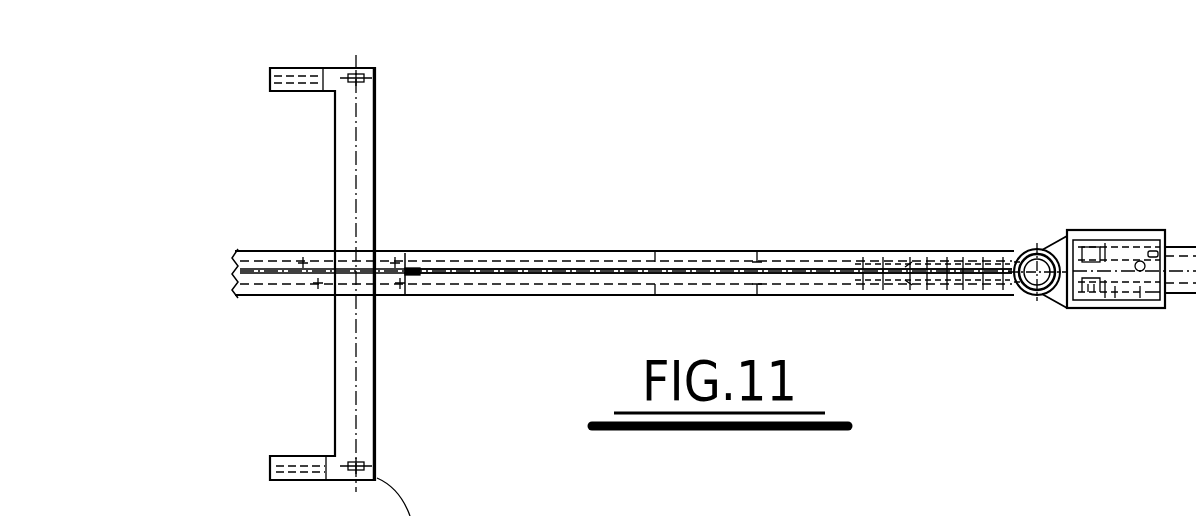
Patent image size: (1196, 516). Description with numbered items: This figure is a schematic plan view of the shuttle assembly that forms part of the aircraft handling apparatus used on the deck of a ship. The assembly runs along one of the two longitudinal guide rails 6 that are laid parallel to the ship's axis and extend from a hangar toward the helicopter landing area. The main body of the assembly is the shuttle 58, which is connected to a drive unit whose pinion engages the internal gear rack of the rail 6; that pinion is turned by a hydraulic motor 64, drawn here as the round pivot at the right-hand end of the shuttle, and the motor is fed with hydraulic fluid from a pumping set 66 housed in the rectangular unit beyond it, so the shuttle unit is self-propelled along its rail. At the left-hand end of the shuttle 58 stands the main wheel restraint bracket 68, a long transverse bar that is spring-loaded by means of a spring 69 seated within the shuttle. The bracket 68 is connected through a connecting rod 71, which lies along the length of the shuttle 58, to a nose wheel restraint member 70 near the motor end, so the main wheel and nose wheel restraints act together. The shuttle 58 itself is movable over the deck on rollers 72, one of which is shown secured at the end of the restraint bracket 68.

The guide rail 6 is at (567, 251).
The shuttle 58 is at (485, 298).
The hydraulic motor 64 is at (1030, 250).
The pumping set 66 is at (1118, 230).
The main wheel restraint bracket 68 is at (375, 157).
The spring 69 is at (420, 266).
The nose wheel restraint member 70 is at (904, 271).
The connecting rod 71 is at (732, 266).
The rollers 72 is at (362, 77).